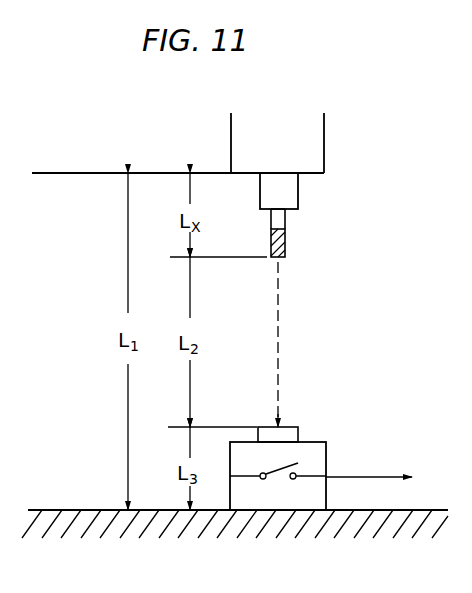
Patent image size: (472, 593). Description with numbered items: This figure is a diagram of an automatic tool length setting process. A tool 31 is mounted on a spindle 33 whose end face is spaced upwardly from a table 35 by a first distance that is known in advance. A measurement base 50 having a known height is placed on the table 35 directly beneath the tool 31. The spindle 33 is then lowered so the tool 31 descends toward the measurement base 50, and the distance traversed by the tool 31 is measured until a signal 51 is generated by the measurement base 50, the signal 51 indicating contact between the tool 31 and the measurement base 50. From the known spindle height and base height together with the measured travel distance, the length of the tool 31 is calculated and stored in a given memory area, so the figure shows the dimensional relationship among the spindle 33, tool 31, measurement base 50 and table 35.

The spindle 33 is at (324, 126).
The tool 31 is at (287, 241).
The measurement base 50 is at (326, 452).
The signal 51 is at (385, 480).
The table 35 is at (158, 526).